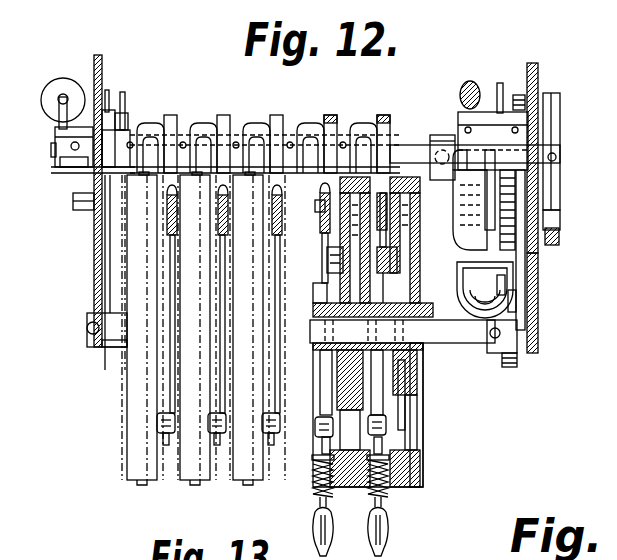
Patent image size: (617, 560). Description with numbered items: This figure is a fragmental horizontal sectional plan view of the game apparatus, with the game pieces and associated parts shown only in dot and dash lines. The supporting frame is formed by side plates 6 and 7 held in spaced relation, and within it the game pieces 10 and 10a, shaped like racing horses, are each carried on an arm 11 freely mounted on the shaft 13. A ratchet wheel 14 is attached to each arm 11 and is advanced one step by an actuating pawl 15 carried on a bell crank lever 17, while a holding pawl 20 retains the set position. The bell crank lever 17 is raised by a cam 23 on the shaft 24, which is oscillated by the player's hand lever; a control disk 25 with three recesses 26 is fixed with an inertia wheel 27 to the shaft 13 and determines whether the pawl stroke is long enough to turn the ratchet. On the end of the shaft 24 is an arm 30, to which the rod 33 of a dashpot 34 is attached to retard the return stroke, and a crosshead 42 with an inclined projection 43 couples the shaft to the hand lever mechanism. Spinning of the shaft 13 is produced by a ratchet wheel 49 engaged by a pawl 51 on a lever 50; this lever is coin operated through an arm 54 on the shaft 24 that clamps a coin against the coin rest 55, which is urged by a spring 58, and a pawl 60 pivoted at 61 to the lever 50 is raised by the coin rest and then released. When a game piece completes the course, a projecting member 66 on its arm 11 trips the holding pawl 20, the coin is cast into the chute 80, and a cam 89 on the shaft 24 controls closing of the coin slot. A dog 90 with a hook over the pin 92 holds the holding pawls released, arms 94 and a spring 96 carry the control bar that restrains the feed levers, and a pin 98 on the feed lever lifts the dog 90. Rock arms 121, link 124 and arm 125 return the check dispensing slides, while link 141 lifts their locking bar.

The side plate 6 is at (538, 290).
The side plate 7 is at (97, 277).
The game piece 10 is at (377, 524).
The game piece 10a is at (321, 524).
The arm 11 is at (166, 441).
The shaft 13 is at (453, 334).
The ratchet wheel 14 is at (172, 358).
The actuating pawl 15 is at (317, 291).
The bell crank lever 17 is at (322, 226).
The holding pawl 20 is at (321, 264).
The cam 23 is at (387, 122).
The shaft 24 is at (54, 158).
The control disk 25 is at (404, 400).
The recess 26 is at (398, 251).
The inertia wheel 27 is at (130, 421).
The arm 30 is at (60, 133).
The rod 33 is at (58, 98).
The dashpot 34 is at (72, 84).
The crosshead 42 is at (552, 137).
The projection 43 is at (558, 243).
The ratchet wheel 49 is at (512, 368).
The lever 50 is at (522, 298).
The pawl 51 is at (516, 308).
The arm 54 is at (490, 213).
The coin rest 55 is at (467, 178).
The spring 58 is at (535, 64).
The pawl 60 is at (515, 94).
The pivot 61 is at (490, 108).
The projecting member 66 is at (317, 428).
The chute 80 is at (485, 285).
The cam 89 is at (442, 142).
The dog 90 is at (320, 152).
The pin 92 is at (326, 258).
The arm 94 is at (462, 84).
The spring 96 is at (455, 95).
The pin 98 is at (316, 208).
The rock arm 121 is at (109, 100).
The link 124 is at (120, 118).
The arm 125 is at (127, 114).
The link 141 is at (108, 212).